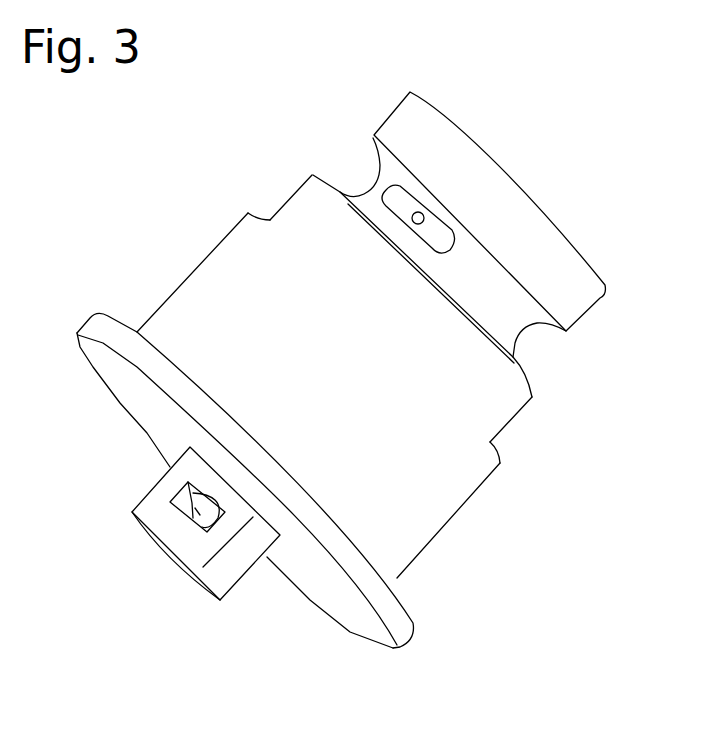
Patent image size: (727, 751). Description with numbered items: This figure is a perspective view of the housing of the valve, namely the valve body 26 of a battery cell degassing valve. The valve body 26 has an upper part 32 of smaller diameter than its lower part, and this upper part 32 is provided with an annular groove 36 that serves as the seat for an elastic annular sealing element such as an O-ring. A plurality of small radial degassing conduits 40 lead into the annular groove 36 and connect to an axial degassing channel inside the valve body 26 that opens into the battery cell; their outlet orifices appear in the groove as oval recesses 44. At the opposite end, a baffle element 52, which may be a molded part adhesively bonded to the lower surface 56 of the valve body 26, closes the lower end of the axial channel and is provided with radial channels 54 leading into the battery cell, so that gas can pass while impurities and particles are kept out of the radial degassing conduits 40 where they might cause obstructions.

The valve body 26 is at (573, 487).
The upper part 32 is at (577, 302).
The annular groove 36 is at (540, 353).
The radial degassing conduits 40 is at (425, 213).
The oval recesses 44 is at (378, 157).
The baffle element 52 is at (227, 578).
The radial channels 54 is at (190, 520).
The lower surface 56 is at (365, 617).